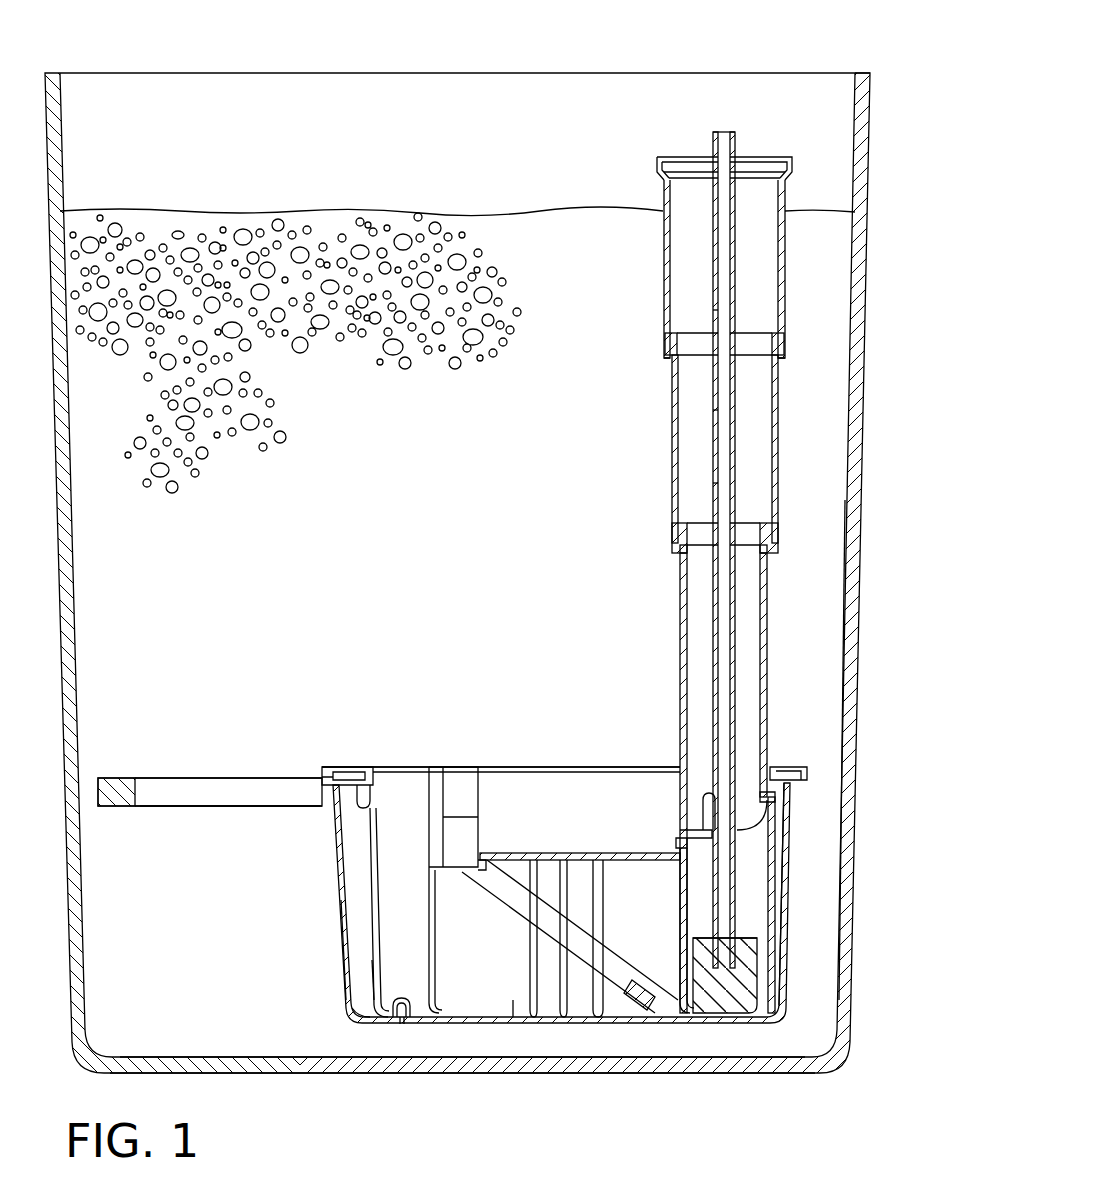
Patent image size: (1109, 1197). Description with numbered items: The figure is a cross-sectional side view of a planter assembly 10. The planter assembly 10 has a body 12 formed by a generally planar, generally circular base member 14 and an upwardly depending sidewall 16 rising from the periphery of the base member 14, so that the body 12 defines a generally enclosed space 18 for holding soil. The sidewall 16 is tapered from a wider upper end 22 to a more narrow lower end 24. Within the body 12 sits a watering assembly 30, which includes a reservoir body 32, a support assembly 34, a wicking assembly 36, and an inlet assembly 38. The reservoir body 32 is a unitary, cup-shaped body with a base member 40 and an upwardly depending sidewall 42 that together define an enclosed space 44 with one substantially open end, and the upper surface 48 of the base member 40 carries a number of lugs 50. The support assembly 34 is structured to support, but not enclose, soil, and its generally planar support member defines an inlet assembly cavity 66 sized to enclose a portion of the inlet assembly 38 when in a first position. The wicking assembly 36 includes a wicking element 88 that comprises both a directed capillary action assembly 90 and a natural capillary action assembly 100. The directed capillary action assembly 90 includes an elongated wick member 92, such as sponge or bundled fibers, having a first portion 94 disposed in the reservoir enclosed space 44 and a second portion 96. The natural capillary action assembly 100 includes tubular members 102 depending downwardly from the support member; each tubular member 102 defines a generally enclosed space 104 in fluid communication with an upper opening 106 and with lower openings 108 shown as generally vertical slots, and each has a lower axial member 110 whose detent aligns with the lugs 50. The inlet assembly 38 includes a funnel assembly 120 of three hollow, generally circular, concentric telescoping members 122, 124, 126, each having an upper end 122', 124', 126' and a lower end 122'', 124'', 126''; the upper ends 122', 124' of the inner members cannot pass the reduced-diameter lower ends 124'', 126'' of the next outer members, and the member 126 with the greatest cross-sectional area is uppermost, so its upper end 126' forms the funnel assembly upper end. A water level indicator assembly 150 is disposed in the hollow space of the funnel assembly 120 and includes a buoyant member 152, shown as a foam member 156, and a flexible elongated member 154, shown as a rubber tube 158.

The planter assembly 10 is at (878, 54).
The body 12 is at (862, 188).
The base member 14 is at (705, 1062).
The upwardly depending sidewall 16 is at (845, 855).
The generally enclosed space 18 is at (810, 592).
The upper end 22 is at (853, 105).
The lower end 24 is at (845, 1030).
The watering assembly 30 is at (499, 660).
The reservoir body 32 is at (346, 920).
The support assembly 34 is at (440, 767).
The wicking assembly 36 is at (200, 778).
The inlet assembly 38 is at (660, 136).
The base member 40 is at (568, 1000).
The upwardly depending sidewall 42 is at (790, 905).
The enclosed space 44 is at (362, 950).
The upper surface 48 is at (513, 1013).
The lugs 50 is at (403, 1025).
The inlet assembly cavity 66 is at (612, 793).
The wicking element 88 is at (414, 670).
The directed capillary action assembly 90 is at (165, 806).
The elongated wick member 92 is at (232, 806).
The first portion 94 is at (613, 950).
The second portion 96 is at (282, 778).
The natural capillary action assembly 100 is at (404, 716).
The tubular members 102 is at (352, 982).
The generally enclosed space 104 is at (392, 988).
The upper opening 106 is at (400, 806).
The lower openings 108 is at (436, 950).
The lower axial member 110 is at (422, 1023).
The funnel assembly 120 is at (700, 106).
The funnel assembly member 122 is at (809, 779).
The upper end 122' is at (815, 810).
The lower end 122'' is at (652, 541).
The funnel assembly member 124 is at (812, 449).
The upper end 124' is at (812, 539).
The lower end 124'' is at (812, 346).
The funnel assembly member 126 is at (670, 269).
The upper end 126' is at (808, 378).
The lower end 126'' is at (808, 142).
The water level indicator assembly 150 is at (713, 483).
The buoyant member 152 is at (740, 995).
The flexible elongated member 154 is at (713, 310).
The foam member 156 is at (752, 970).
The rubber tube 158 is at (713, 410).